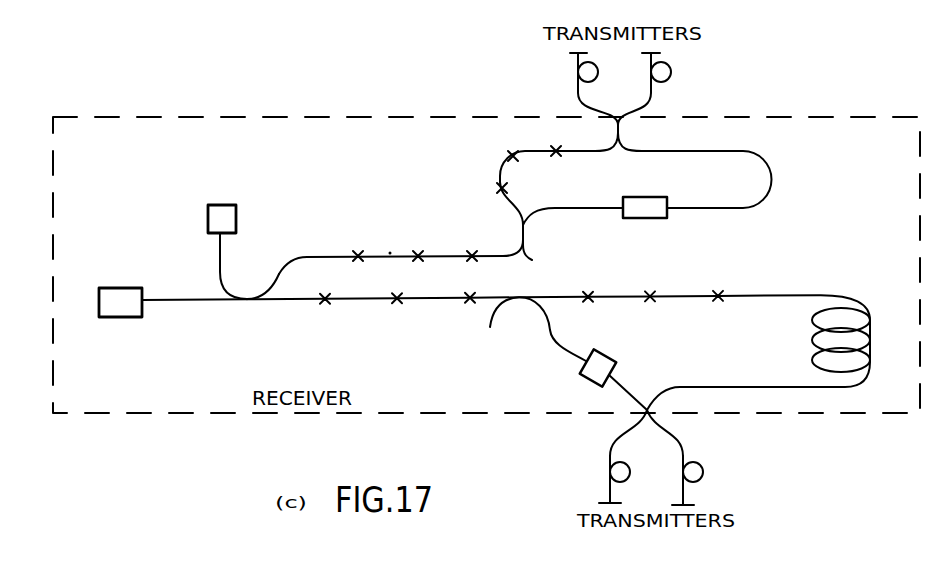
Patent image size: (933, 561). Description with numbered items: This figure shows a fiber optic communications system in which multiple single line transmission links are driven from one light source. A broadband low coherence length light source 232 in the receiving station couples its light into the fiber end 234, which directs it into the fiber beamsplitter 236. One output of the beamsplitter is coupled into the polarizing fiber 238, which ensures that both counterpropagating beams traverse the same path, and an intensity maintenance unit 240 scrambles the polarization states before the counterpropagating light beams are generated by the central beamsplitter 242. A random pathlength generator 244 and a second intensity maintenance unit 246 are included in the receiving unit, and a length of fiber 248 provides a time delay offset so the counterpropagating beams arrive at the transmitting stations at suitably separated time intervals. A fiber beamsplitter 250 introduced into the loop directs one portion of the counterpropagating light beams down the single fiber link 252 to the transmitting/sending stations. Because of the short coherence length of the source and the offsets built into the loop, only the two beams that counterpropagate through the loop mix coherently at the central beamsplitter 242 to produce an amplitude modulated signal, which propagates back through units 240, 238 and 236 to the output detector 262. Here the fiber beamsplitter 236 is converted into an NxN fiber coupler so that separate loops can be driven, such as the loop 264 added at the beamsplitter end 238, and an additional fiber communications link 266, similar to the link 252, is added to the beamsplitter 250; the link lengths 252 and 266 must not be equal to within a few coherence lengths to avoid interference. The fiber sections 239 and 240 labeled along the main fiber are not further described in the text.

The broadband low coherence length light source 232 is at (119, 289).
The fiber end 234 is at (185, 299).
The fiber beamsplitter 236 is at (249, 302).
The polarizing fiber 238 is at (325, 256).
The fiber section 239 is at (361, 300).
The intensity maintenance unit 240 is at (440, 299).
The central beamsplitter 242 is at (519, 296).
The random pathlength generator 244 is at (589, 380).
The intensity maintenance unit 246 is at (690, 297).
The length of fiber 248 is at (812, 343).
The fiber beamsplitter 250 is at (645, 412).
The single fiber link 252 is at (688, 460).
The output detector 262 is at (223, 205).
The loop 264 is at (716, 182).
The additional fiber communications link 266 is at (607, 456).